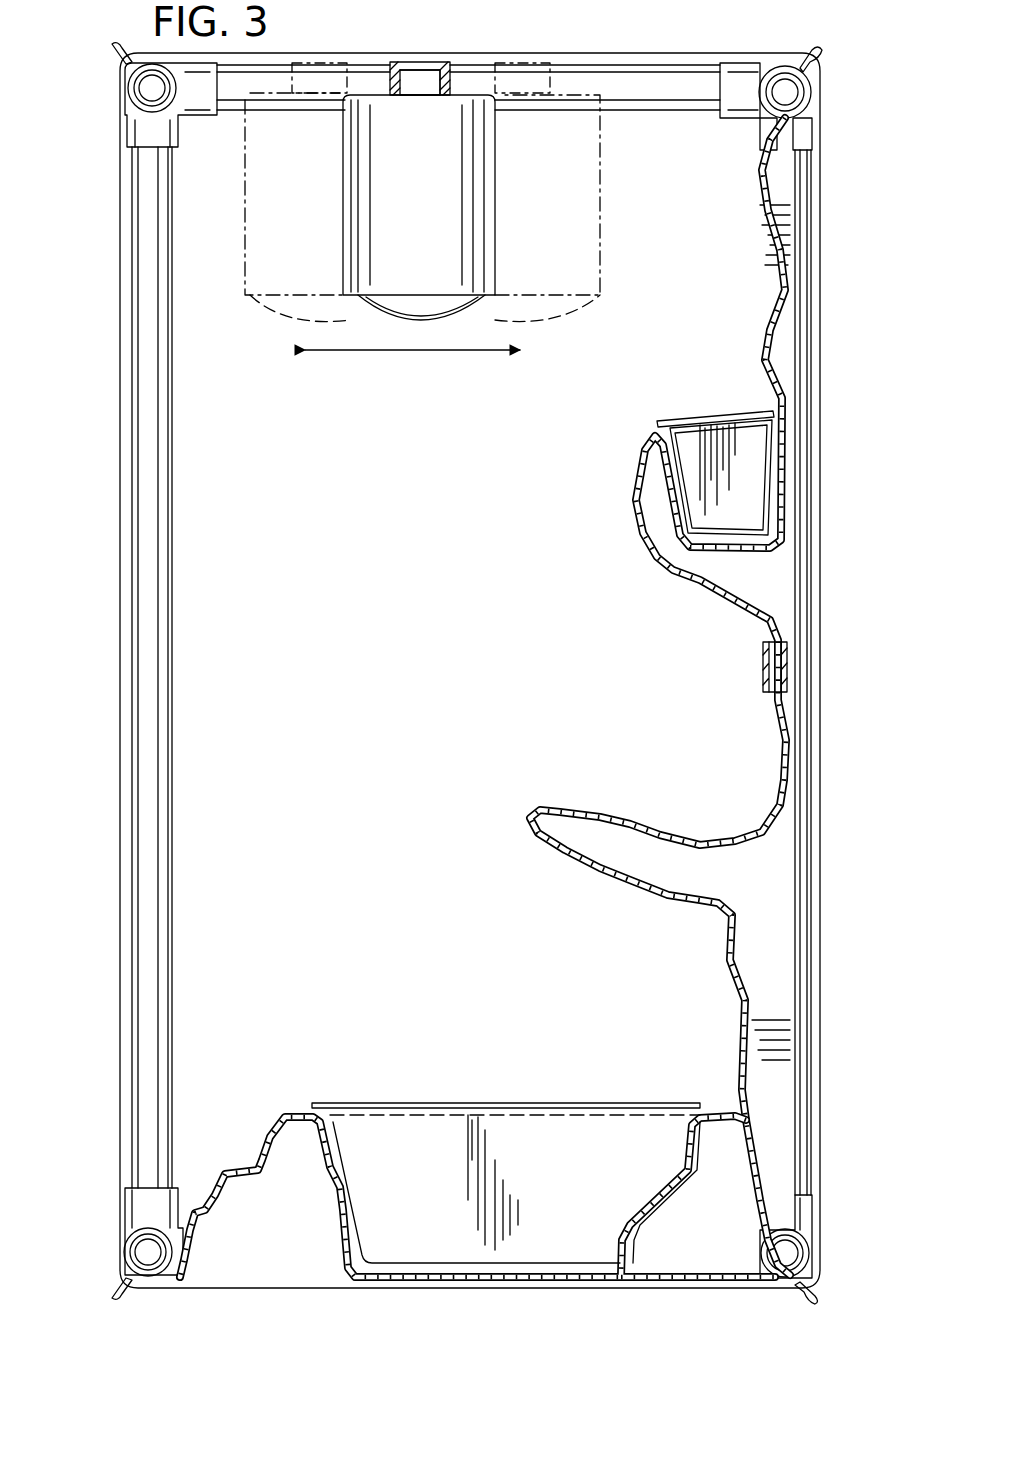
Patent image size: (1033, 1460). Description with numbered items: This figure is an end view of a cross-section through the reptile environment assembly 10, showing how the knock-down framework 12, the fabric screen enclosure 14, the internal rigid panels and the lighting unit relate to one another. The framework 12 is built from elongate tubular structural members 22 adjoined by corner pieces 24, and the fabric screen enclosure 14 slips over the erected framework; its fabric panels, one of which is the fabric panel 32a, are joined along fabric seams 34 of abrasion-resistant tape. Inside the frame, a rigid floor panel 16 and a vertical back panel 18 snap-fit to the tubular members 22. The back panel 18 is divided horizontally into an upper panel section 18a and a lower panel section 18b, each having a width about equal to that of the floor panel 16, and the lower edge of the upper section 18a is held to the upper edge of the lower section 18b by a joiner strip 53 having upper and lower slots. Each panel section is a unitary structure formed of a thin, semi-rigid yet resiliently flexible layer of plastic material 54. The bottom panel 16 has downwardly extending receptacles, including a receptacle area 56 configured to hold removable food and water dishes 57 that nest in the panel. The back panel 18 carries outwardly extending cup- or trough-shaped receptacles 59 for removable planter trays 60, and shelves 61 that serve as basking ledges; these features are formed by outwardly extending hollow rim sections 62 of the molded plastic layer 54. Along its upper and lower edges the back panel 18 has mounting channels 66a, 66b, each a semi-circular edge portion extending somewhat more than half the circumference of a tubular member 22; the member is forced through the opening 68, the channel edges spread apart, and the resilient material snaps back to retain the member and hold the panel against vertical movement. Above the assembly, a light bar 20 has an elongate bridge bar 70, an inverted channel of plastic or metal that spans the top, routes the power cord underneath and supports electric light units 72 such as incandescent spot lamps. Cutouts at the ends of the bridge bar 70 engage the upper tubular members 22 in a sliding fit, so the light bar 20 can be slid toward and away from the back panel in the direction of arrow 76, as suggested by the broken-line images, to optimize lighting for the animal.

The reptile environment assembly 10 is at (112, 338).
The framework 12 is at (140, 373).
The fabric screen enclosure 14 is at (120, 404).
The floor panel 16 is at (266, 1126).
The back panel 18 is at (636, 480).
The upper panel section 18a is at (760, 320).
The lower panel section 18b is at (725, 936).
The light bar 20 is at (405, 55).
The tubular structural members 22 is at (145, 437).
The corner pieces 24 is at (140, 126).
The fabric panel 32a is at (122, 527).
The fabric seams 34 is at (118, 60).
The joiner strip 53 is at (765, 664).
The layer of plastic material 54 is at (612, 878).
The receptacle area 56 is at (340, 1150).
The food and/or water dishes 57 is at (500, 1128).
The cup- or trough-shaped receptacles 59 is at (690, 440).
The planter trays 60 is at (718, 430).
The shelves 61 is at (594, 808).
The hollow rim sections 62 is at (640, 434).
The mounting channel 66a is at (786, 66).
The mounting channel 66b is at (805, 1280).
The opening 68 is at (812, 86).
The bridge bar 70 is at (432, 62).
The electric light units 72 is at (432, 192).
The arrow 76 is at (390, 354).